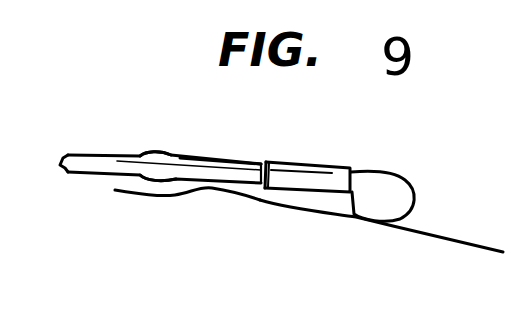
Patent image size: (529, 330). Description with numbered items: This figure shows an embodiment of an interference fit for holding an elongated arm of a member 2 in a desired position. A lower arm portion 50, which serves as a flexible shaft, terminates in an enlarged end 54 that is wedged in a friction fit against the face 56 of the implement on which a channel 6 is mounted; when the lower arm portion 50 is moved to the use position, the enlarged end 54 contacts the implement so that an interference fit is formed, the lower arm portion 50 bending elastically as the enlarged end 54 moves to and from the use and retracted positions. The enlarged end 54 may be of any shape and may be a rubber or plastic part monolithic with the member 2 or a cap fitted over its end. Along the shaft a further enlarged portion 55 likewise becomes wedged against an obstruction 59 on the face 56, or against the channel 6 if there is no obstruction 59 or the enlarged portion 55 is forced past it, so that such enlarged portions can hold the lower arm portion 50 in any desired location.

The member 2 is at (88, 150).
The enlarged portion 55 is at (177, 122).
The lower arm portion 50 is at (221, 160).
The channel 6 is at (321, 163).
The enlarged end 54 is at (418, 199).
The face 56 is at (473, 253).
The obstruction 59 is at (208, 197).